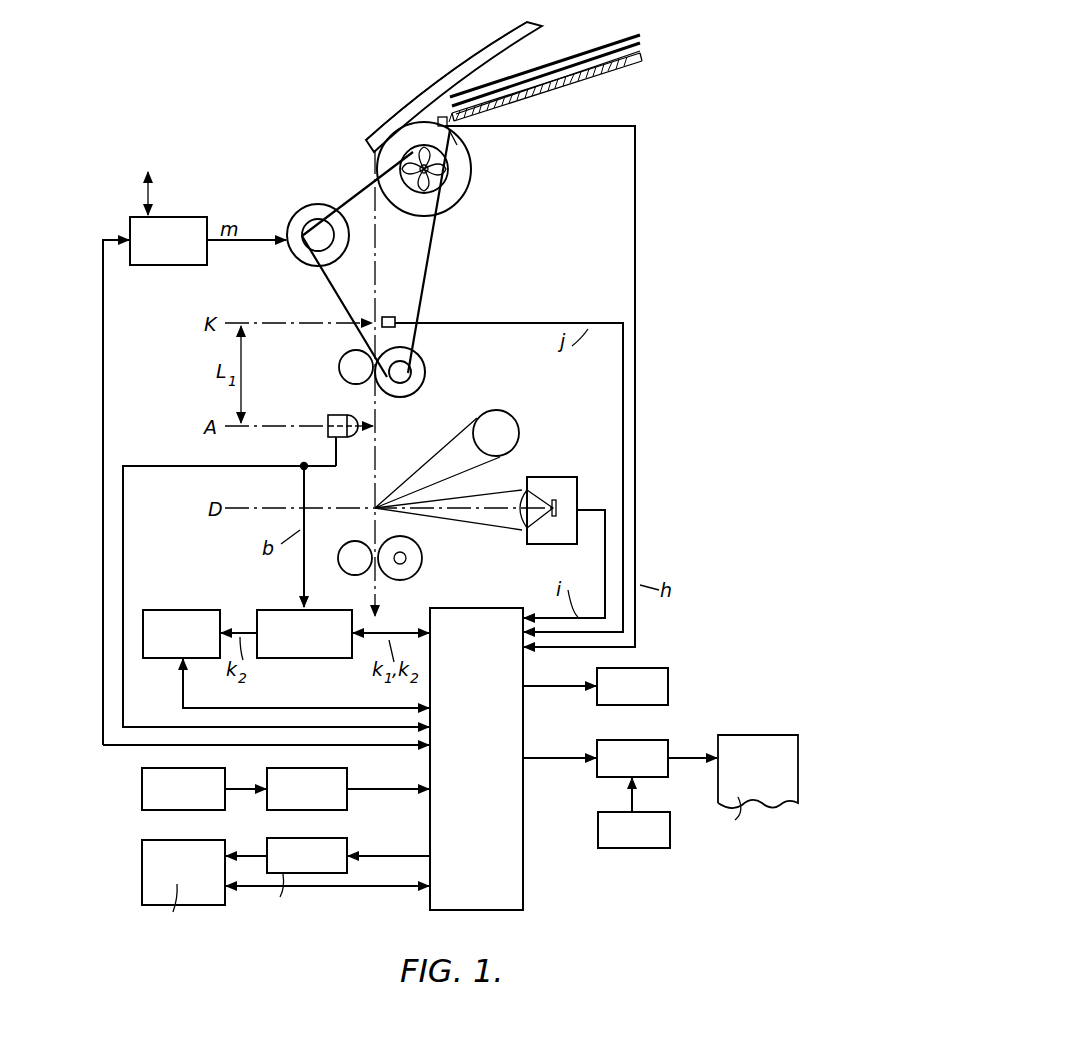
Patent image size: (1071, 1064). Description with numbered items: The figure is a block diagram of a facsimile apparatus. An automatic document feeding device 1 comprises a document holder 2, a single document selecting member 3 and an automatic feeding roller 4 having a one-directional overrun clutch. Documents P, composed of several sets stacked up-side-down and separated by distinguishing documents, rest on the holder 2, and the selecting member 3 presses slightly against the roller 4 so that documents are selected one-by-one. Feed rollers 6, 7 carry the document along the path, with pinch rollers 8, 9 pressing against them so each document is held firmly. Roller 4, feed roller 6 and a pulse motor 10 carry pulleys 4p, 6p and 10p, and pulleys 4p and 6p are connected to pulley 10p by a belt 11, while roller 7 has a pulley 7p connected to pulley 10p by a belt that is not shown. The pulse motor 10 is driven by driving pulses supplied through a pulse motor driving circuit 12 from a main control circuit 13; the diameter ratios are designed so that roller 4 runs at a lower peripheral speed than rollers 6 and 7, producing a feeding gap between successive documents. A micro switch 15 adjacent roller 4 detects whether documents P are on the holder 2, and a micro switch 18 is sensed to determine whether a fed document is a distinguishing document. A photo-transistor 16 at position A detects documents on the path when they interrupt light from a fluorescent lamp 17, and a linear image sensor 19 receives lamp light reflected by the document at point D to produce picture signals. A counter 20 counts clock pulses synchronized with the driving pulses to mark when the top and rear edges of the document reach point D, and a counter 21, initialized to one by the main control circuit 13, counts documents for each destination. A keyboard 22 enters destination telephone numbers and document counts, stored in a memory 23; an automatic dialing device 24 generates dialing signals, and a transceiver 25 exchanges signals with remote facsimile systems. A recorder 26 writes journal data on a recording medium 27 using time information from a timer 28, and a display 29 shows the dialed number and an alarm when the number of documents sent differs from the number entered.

The automatic document feeding device 1 is at (375, 109).
The document holder 2 is at (577, 80).
The single document selecting member 3 is at (490, 52).
The automatic feeding roller 4 is at (472, 167).
The pulley 4p is at (423, 194).
The feed roller 6 is at (422, 362).
The pulley 6p is at (411, 372).
The feed roller 7 is at (421, 547).
The pulley 7p is at (406, 558).
The pinch roller 8 is at (341, 358).
The pinch roller 9 is at (350, 542).
The pulse motor 10 is at (320, 204).
The pulley 10p is at (303, 238).
The belt 11 is at (423, 297).
The pulse motor driving circuit 12 is at (165, 217).
The main control circuit 13 is at (523, 878).
The micro switch 15 is at (458, 140).
The photo-transistor 16 is at (328, 429).
The fluorescent lamp 17 is at (513, 418).
The micro switch 18 is at (389, 316).
The linear image sensor 19 is at (545, 478).
The counter 20 is at (285, 610).
The counter 21 is at (178, 610).
The keyboard 22 is at (142, 788).
The memory 23 is at (347, 776).
The automatic dialing device 24 is at (347, 846).
The transceiver 25 is at (142, 872).
The recorder 26 is at (601, 740).
The recording medium 27 is at (750, 735).
The timer 28 is at (606, 812).
The display 29 is at (656, 668).
The documents P is at (590, 48).